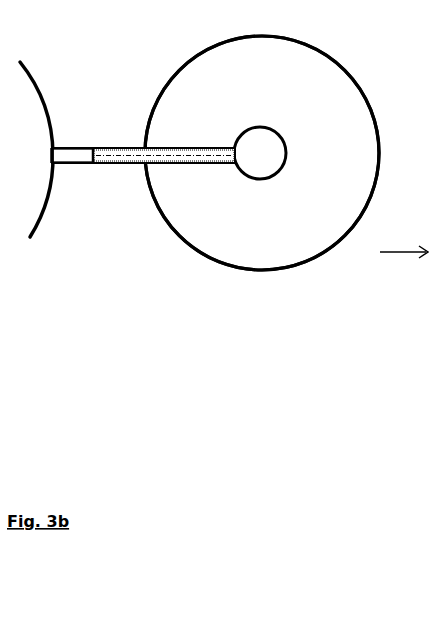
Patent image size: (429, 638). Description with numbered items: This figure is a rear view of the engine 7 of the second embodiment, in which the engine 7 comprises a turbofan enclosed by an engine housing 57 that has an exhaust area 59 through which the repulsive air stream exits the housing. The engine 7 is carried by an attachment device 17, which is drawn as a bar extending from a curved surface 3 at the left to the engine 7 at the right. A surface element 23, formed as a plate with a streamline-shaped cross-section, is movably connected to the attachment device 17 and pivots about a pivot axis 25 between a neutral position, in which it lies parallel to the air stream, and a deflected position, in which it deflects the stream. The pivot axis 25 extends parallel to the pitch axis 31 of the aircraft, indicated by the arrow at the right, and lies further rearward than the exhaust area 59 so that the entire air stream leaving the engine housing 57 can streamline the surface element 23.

The curved surface 3 is at (38, 100).
The engine 7 is at (253, 162).
The attachment device 17 is at (67, 156).
The surface element 23 is at (187, 155).
The pivot axis 25 is at (130, 157).
The pitch axis 31 is at (396, 252).
The engine housing 57 is at (307, 265).
The exhaust area 59 is at (250, 227).